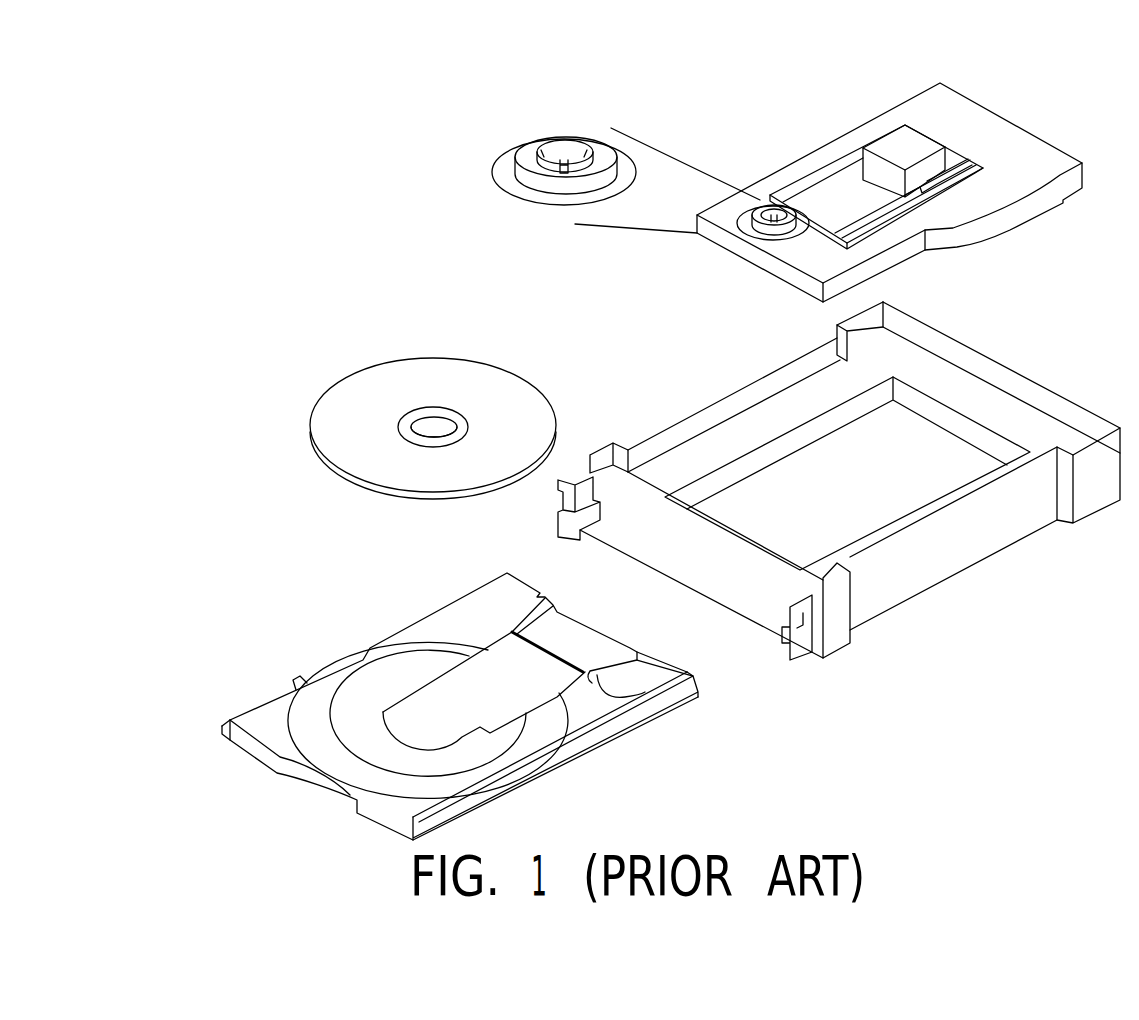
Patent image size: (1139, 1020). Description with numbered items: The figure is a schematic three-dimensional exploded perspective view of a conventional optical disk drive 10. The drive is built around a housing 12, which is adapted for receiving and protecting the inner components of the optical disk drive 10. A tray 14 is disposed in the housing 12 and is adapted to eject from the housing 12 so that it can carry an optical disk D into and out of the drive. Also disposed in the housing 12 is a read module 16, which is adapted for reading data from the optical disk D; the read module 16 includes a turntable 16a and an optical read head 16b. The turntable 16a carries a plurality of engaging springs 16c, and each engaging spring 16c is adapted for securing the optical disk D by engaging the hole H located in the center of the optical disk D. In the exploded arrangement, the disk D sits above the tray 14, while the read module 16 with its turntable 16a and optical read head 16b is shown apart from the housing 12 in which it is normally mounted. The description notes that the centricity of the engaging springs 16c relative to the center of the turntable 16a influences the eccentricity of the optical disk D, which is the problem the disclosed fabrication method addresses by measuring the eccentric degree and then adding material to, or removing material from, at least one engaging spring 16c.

The optical disk drive 10 is at (1133, 691).
The housing 12 is at (1046, 362).
The tray 14 is at (278, 662).
The read module 16 is at (860, 68).
The turntable 16a is at (772, 214).
The optical read head 16b is at (895, 148).
The engaging spring 16c is at (541, 155).
The optical disk D is at (517, 412).
The hole H is at (435, 432).